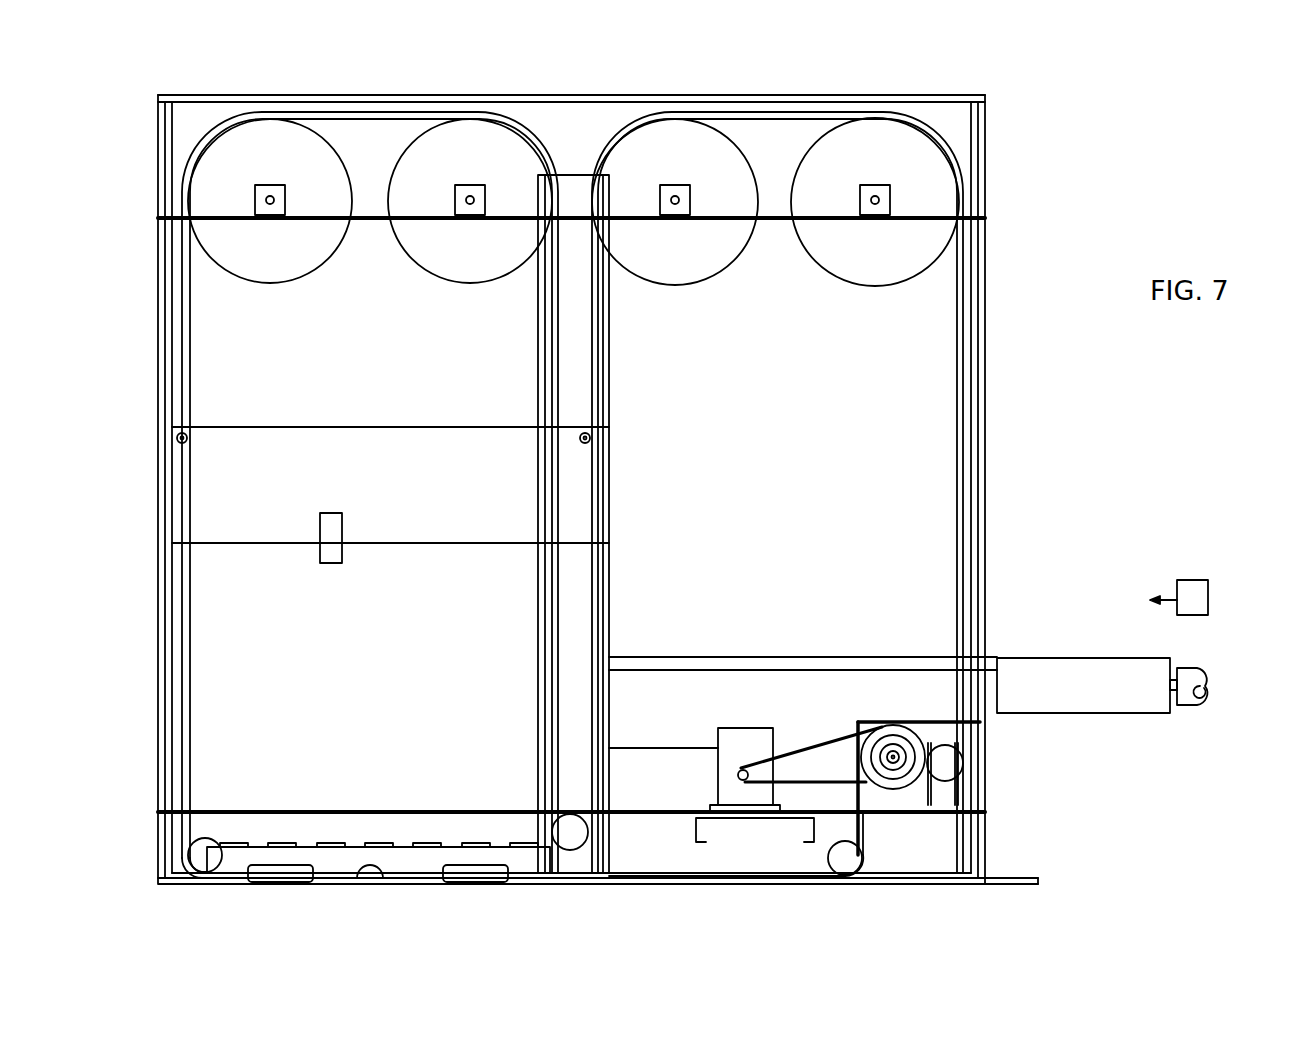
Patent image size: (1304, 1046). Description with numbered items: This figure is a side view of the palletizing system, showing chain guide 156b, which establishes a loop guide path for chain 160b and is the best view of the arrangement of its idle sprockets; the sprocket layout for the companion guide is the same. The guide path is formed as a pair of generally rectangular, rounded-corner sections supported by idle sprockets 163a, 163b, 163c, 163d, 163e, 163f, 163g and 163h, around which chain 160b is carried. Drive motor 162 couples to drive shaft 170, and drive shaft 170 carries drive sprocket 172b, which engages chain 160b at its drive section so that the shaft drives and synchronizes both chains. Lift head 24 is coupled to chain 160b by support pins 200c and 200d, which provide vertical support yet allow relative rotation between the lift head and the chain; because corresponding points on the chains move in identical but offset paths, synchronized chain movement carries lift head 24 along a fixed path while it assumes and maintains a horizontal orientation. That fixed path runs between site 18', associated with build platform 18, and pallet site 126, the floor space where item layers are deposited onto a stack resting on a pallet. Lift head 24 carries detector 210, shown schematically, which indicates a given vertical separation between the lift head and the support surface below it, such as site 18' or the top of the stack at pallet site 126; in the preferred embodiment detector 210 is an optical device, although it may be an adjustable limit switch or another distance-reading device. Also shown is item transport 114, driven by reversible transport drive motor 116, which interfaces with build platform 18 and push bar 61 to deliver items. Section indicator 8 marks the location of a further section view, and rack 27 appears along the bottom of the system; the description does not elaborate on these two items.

The section line 8- 8 is at (168, 80).
The chain 160b is at (357, 112).
The chain guide 156b is at (923, 175).
The idle sprocket 163f is at (243, 283).
The idle sprocket 163e is at (440, 283).
The idle sprocket 163c is at (652, 284).
The idle sprocket 163b is at (852, 285).
The support pin 200c is at (184, 444).
The support pin 200d is at (583, 444).
The lift head 24 is at (434, 521).
The detector 210 is at (342, 560).
The site 18' is at (803, 638).
The build platform 18 is at (803, 695).
The drive motor 162 is at (738, 728).
The drive shaft 170 is at (893, 757).
The drive sprocket 172b is at (928, 740).
The idle sprocket 163a is at (943, 755).
The idle sprocket 163h is at (828, 858).
The idle sprocket 163g is at (210, 838).
The idle sprocket 163d is at (572, 814).
The rack 27 is at (330, 845).
The pallet site 126 is at (378, 870).
The push bar 61 is at (1190, 580).
The item transport 114 is at (1065, 658).
The transport drive motor 116 is at (1190, 706).